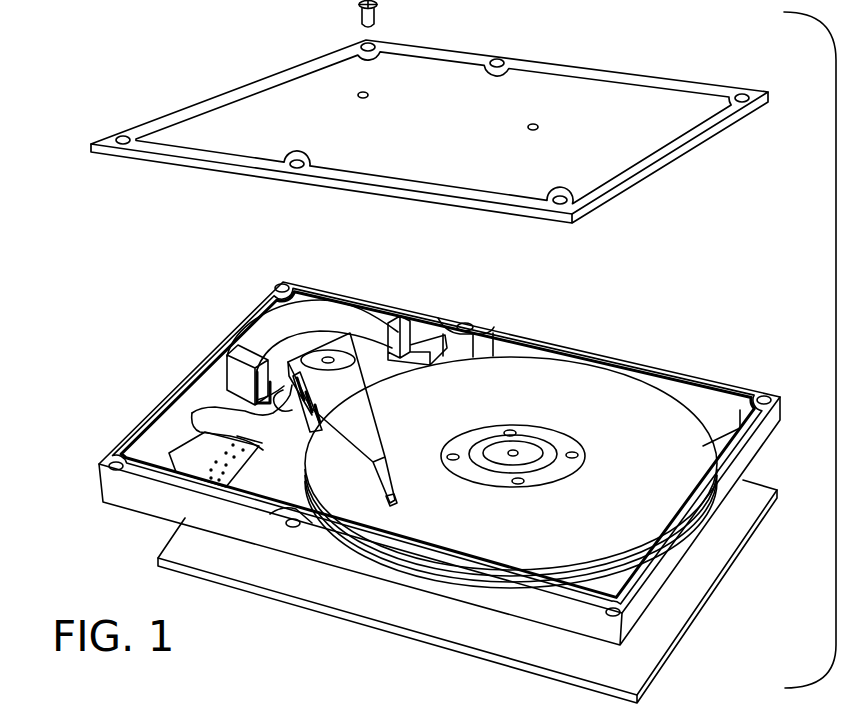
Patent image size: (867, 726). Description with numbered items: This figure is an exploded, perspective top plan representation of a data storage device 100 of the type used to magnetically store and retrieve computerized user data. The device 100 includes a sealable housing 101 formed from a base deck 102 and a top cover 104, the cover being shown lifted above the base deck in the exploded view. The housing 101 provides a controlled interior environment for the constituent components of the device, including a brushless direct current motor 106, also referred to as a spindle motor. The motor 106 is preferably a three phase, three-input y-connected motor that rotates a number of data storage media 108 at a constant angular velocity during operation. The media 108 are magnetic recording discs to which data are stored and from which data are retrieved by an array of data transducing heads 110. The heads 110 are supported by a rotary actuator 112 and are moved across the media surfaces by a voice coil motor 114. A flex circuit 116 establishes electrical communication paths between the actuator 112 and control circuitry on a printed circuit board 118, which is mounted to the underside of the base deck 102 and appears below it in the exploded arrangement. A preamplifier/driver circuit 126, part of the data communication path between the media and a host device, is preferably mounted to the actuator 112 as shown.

The data storage device 100 is at (157, 50).
The sealable housing 101 is at (146, 279).
The base deck 102 is at (690, 543).
The top cover 104 is at (530, 83).
The brushless direct current motor 106 is at (528, 447).
The data storage media 108 is at (538, 568).
The data transducing heads 110 is at (394, 498).
The rotary actuator 112 is at (363, 427).
The voice coil motor 114 is at (308, 322).
The flex circuit 116 is at (223, 413).
The printed circuit board 118 is at (253, 583).
The preamplifier/driver circuit 126 is at (284, 405).